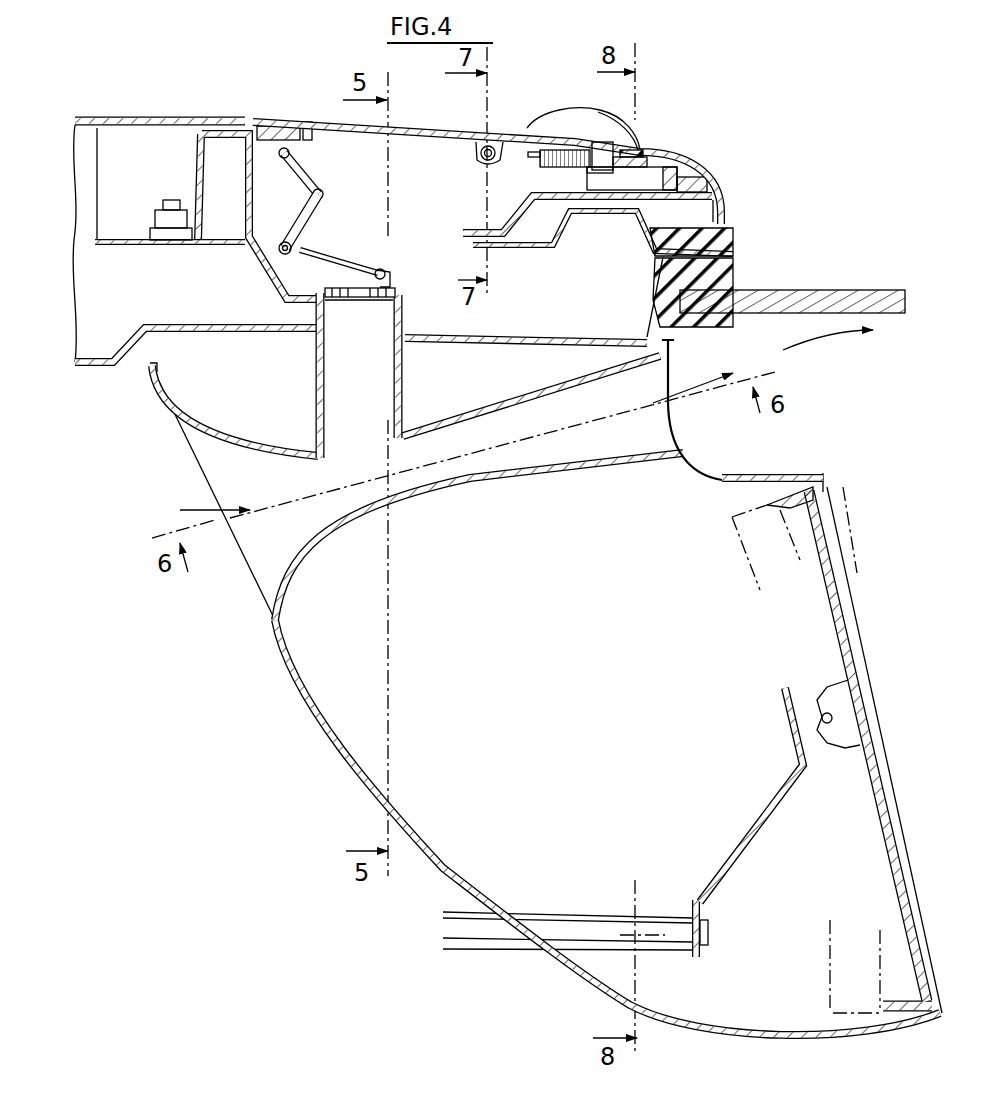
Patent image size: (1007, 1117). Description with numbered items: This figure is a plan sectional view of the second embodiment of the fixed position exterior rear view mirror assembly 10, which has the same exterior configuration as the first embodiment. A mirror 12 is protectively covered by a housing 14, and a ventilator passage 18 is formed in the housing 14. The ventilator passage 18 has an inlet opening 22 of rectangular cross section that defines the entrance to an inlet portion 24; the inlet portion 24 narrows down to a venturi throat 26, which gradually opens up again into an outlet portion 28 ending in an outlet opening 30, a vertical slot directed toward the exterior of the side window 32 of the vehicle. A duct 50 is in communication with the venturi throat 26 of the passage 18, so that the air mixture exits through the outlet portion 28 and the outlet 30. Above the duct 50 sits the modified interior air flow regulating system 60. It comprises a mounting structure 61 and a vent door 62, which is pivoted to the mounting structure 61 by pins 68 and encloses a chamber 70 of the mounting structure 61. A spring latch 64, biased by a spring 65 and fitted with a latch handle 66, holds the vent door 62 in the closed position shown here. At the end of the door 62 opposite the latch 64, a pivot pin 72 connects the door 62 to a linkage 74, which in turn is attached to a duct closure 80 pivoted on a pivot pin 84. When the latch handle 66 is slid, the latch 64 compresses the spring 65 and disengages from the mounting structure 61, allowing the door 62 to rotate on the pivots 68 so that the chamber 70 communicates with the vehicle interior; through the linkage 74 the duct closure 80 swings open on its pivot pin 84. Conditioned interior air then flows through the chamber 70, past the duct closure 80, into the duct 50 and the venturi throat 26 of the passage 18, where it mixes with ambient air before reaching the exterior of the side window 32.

The exterior rear view mirror assembly 10 is at (492, 932).
The mirror 12 is at (813, 508).
The housing 14 is at (598, 709).
The ventilator passage 18 is at (267, 562).
The inlet opening 22 is at (197, 466).
The inlet portion 24 is at (271, 497).
The venturi throat 26 is at (502, 445).
The outlet portion 28 is at (644, 449).
The outlet opening 30 is at (675, 428).
The side window 32 is at (833, 297).
The duct 50 is at (378, 405).
The interior air flow regulating system 60 is at (302, 106).
The mounting structure 61 is at (177, 115).
The vent door 62 is at (445, 113).
The spring latch 64 is at (607, 173).
The spring 65 is at (557, 167).
The latch handle 66 is at (603, 128).
The pins 68 is at (481, 153).
The chamber 70 is at (439, 213).
The pivot pin 72 is at (293, 153).
The linkage 74 is at (308, 213).
The duct closure 80 is at (383, 302).
The pivot pin 84 is at (360, 298).